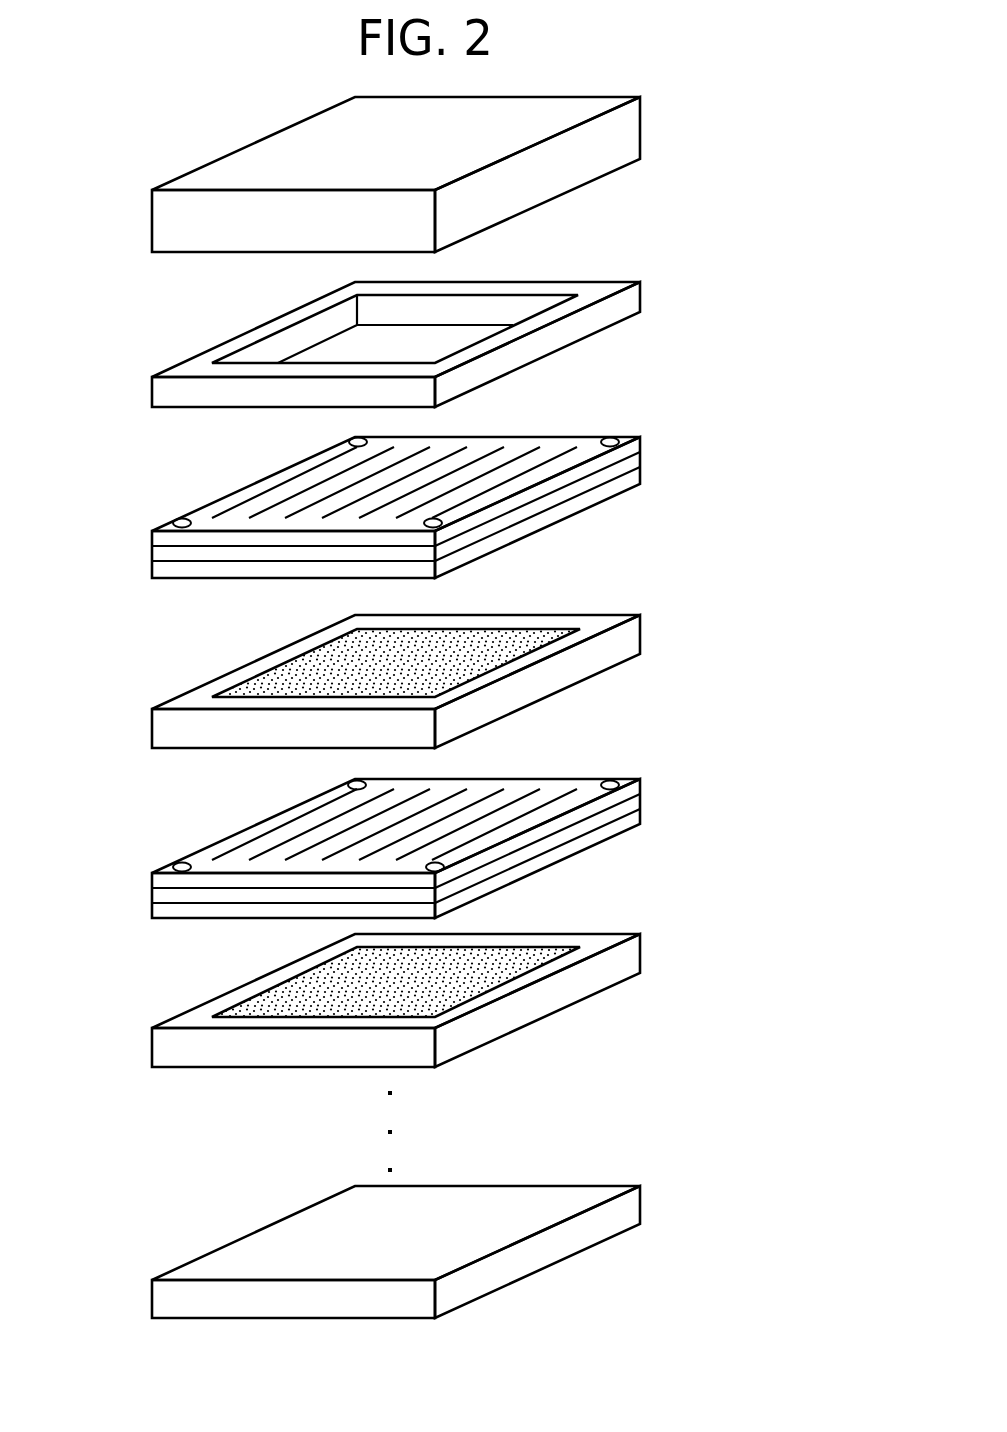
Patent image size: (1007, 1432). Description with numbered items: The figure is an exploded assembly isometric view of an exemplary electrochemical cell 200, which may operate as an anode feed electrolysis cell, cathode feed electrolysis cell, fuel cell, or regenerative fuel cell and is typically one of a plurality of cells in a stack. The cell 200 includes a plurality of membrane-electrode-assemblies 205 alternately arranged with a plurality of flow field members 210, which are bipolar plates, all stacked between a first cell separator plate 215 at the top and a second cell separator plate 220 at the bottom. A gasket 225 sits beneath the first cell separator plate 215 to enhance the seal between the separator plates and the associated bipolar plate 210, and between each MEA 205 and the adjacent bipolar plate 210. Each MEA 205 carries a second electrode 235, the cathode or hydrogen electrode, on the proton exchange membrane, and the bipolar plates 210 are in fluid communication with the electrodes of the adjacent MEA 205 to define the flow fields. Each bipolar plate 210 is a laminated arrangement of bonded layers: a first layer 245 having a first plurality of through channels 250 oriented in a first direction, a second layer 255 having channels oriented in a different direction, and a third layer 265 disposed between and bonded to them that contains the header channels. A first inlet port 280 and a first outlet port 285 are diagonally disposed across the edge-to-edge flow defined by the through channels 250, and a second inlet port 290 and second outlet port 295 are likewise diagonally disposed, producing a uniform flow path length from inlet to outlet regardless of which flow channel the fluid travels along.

The electrochemical cell 200 is at (117, 133).
The first cell separator plate 215 is at (642, 127).
The gasket 225 is at (642, 287).
The flow field member 210 is at (427, 668).
The first plurality of through channels 250 is at (267, 492).
The first inlet port 280 is at (182, 518).
The first outlet port 285 is at (610, 437).
The second inlet port 290 is at (443, 520).
The second outlet port 295 is at (349, 441).
The membrane-electrode-assembly 205 is at (459, 839).
The second electrode 235 is at (323, 668).
The first layer 245 is at (152, 880).
The third layer 265 is at (152, 895).
The second layer 255 is at (152, 912).
The second cell separator plate 220 is at (642, 1205).